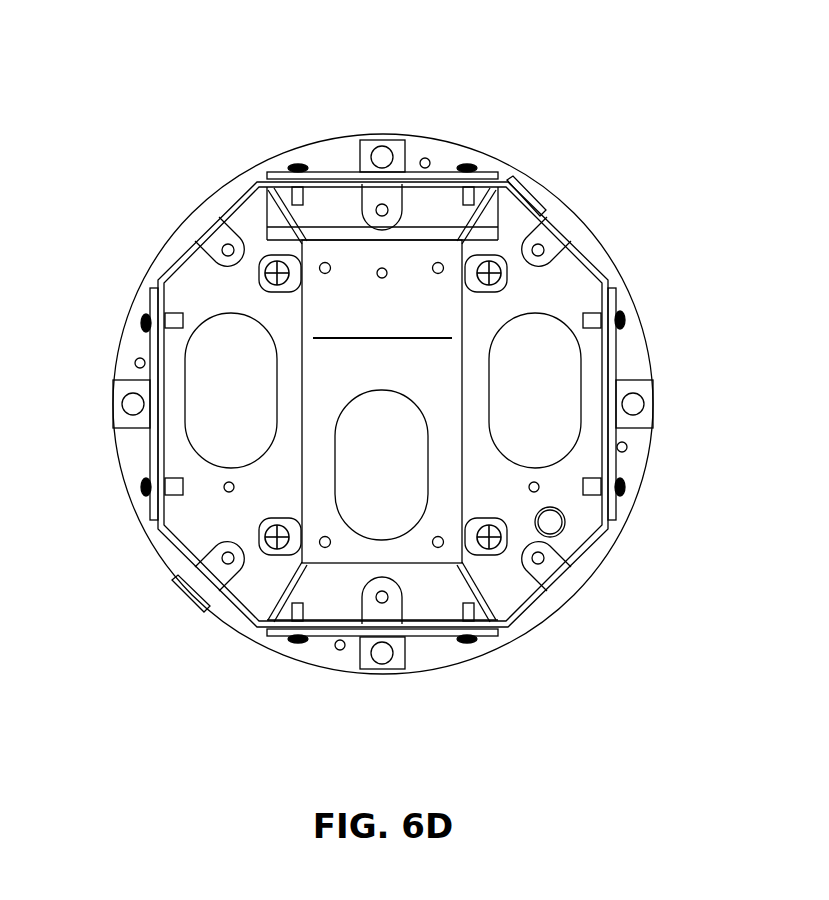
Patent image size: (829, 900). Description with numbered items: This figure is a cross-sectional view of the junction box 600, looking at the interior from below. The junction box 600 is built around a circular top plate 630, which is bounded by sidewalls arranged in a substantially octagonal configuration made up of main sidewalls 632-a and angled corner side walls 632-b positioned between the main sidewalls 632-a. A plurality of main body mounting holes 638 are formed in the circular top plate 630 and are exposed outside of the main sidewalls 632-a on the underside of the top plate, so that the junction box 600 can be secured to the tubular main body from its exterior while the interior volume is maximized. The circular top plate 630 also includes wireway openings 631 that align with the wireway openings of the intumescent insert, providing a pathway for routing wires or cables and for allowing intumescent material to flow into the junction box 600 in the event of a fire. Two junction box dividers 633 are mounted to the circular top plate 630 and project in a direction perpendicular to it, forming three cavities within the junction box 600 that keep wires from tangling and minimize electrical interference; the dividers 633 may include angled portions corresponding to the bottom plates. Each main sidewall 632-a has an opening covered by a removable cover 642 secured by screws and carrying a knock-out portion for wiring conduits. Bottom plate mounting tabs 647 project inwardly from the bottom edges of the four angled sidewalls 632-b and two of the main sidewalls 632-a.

The junction box 600 is at (224, 165).
The circular top plate 630 is at (580, 228).
The wireway openings 631 is at (383, 426).
The main sidewalls 632-a is at (603, 303).
The angled corner side walls 632-b is at (590, 258).
The junction box dividers 633 is at (460, 370).
The main body mounting holes 638 is at (384, 157).
The removable cover 642 is at (135, 363).
The bottom plate mounting tabs 647 is at (214, 247).